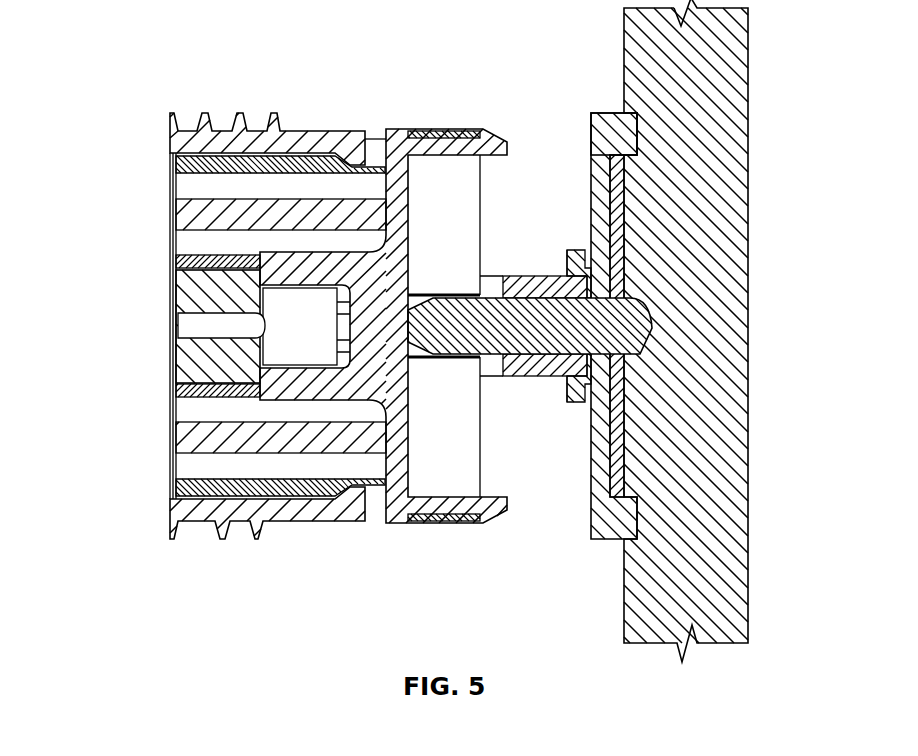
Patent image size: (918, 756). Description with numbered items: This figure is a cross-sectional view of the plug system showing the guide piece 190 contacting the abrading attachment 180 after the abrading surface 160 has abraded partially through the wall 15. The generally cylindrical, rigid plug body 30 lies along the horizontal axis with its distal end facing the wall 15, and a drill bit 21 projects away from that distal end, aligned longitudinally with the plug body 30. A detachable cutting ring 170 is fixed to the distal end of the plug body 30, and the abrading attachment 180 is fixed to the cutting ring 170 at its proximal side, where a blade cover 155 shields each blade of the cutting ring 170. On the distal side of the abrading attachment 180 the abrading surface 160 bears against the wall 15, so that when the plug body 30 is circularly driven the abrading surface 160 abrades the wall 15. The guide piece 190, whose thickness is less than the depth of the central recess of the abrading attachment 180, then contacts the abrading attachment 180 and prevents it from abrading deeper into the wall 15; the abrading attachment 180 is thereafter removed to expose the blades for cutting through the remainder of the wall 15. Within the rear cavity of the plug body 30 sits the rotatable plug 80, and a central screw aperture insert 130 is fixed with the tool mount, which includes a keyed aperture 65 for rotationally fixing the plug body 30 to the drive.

The wall 15 is at (632, 34).
The drill bit 21 is at (577, 250).
The plug body 30 is at (347, 133).
The keyed aperture 65 is at (288, 286).
The plug 80 is at (185, 215).
The central screw aperture insert 130 is at (187, 357).
The blade cover 155 is at (529, 365).
The abrading surface 160 is at (640, 136).
The cutting ring 170 is at (436, 144).
The abrading attachment 180 is at (596, 139).
The guide piece 190 is at (625, 260).